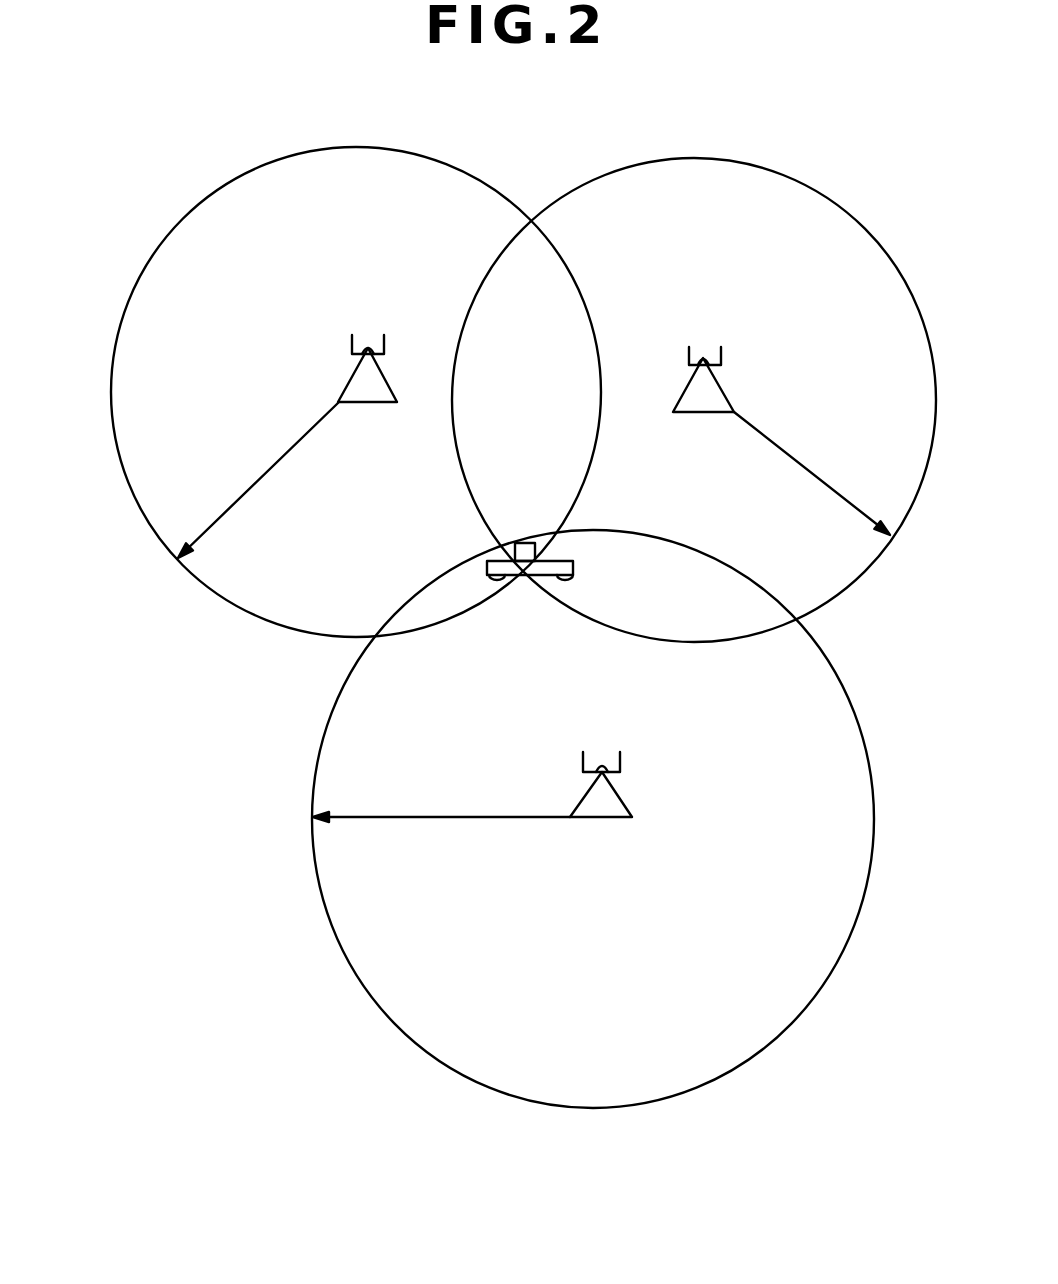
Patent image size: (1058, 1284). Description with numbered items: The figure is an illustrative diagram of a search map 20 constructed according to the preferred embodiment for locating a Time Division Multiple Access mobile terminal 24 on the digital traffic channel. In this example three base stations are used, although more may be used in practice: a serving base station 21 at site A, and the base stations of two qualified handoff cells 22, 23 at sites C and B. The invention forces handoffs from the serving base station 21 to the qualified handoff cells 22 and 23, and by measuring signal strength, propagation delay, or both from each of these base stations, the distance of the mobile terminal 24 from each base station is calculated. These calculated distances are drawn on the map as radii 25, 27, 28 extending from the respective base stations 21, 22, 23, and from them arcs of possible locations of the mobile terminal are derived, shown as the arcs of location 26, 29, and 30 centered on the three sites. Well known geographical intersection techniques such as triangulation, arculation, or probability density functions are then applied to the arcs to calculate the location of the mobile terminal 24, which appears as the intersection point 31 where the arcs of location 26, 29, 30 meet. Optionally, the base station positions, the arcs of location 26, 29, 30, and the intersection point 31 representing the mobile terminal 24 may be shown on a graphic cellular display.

The search map 20 is at (287, 665).
The serving base station 21 is at (350, 379).
The qualified handoff cell 22 is at (727, 393).
The qualified handoff cell 23 is at (625, 800).
The mobile terminal 24 is at (575, 566).
The distance from site A 25 is at (255, 497).
The arc of location 26 is at (142, 512).
The distance from site C 27 is at (812, 472).
The distance from site B 28 is at (430, 818).
The arc of location 29 is at (857, 220).
The arc of location 30 is at (347, 958).
The intersection point 31 is at (525, 526).